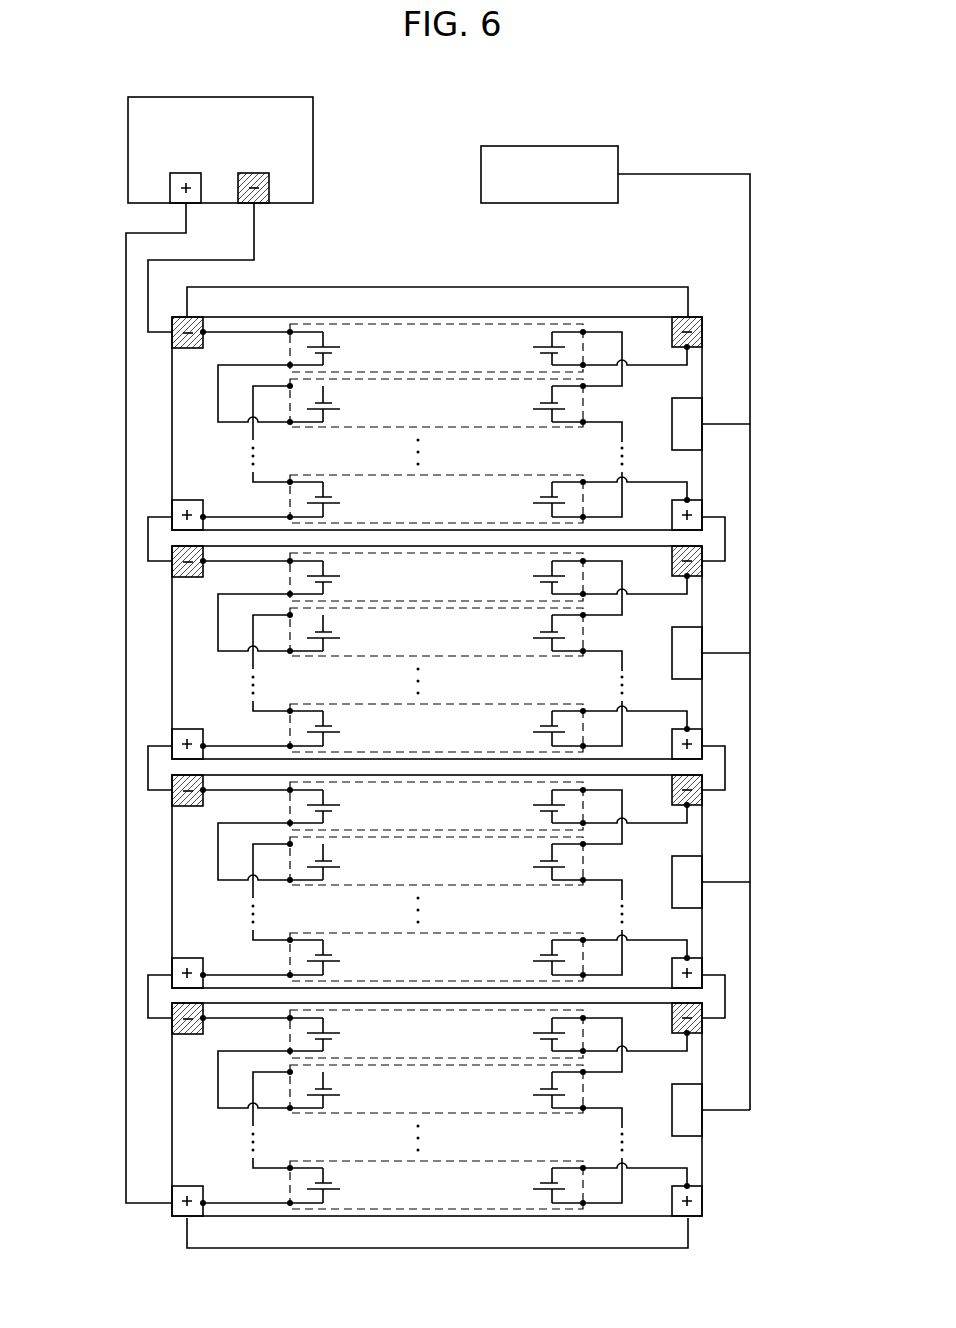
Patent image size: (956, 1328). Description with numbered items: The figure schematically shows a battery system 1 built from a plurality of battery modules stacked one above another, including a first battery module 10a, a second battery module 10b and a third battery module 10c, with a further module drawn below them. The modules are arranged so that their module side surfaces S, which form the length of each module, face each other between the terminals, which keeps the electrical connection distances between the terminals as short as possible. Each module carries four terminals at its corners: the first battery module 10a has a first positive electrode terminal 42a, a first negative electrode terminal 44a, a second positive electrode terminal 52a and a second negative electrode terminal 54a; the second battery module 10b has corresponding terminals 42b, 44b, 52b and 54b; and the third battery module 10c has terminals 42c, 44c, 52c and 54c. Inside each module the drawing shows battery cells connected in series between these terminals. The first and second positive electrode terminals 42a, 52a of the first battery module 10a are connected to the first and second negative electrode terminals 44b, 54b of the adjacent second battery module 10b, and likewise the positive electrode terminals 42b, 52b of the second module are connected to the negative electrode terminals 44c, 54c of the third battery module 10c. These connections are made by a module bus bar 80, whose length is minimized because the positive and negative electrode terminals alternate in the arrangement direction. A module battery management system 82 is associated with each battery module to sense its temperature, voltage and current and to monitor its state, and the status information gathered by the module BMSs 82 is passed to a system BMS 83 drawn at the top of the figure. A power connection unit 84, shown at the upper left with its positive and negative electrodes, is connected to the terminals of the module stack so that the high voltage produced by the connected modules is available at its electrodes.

The battery system 1 is at (699, 130).
The module side surface S is at (448, 533).
The first battery module 10a is at (434, 423).
The second battery module 10b is at (434, 652).
The third battery module 10c is at (434, 881).
The first positive electrode terminal 42a is at (172, 515).
The first positive electrode terminal 42b is at (172, 737).
The first positive electrode terminal 42c is at (172, 966).
The first negative electrode terminal 44a is at (172, 340).
The first negative electrode terminal 44b is at (172, 569).
The first negative electrode terminal 44c is at (172, 800).
The second positive electrode terminal 52a is at (702, 510).
The second positive electrode terminal 52b is at (702, 733).
The second positive electrode terminal 52c is at (702, 962).
The second negative electrode terminal 54a is at (702, 325).
The second negative electrode terminal 54b is at (702, 568).
The second negative electrode terminal 54c is at (702, 800).
The module bus bar 80 is at (148, 540).
The module battery management system 82 is at (690, 398).
The system battery management system 83 is at (546, 146).
The power connection unit 84 is at (314, 110).